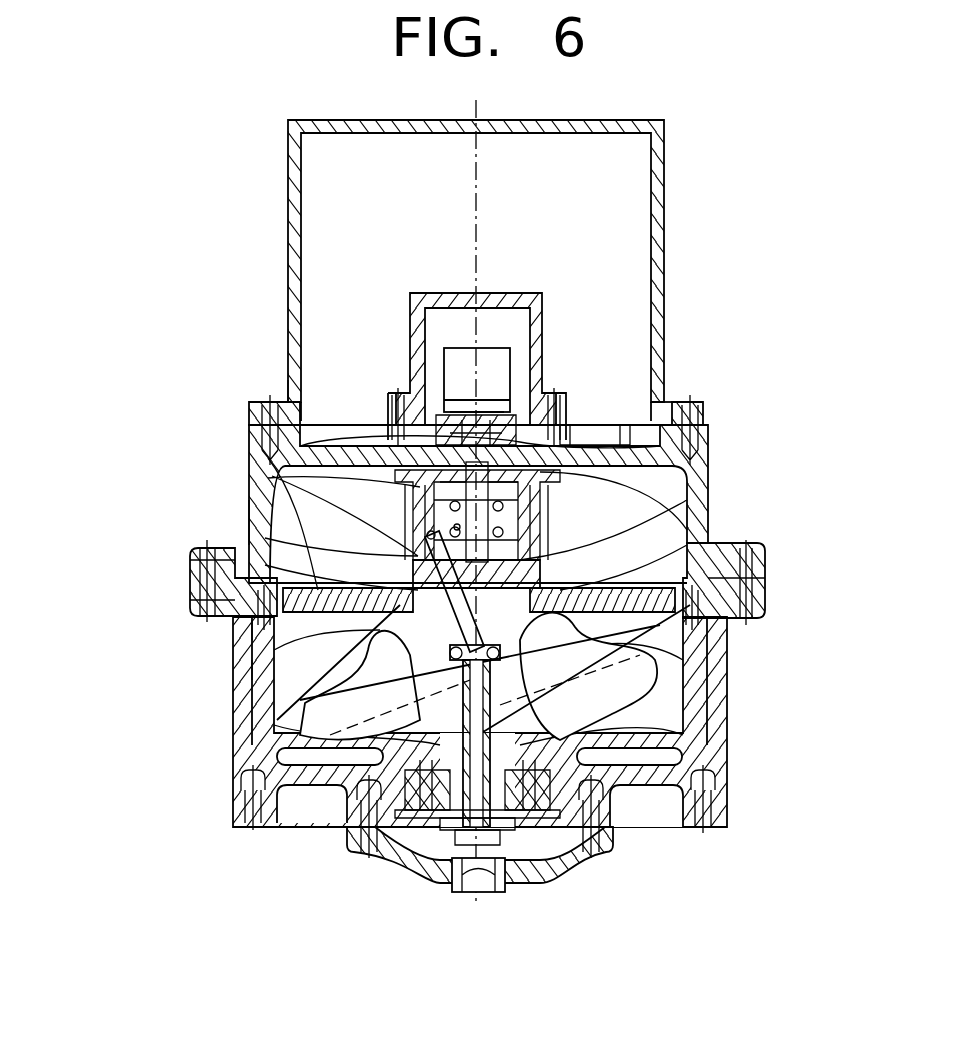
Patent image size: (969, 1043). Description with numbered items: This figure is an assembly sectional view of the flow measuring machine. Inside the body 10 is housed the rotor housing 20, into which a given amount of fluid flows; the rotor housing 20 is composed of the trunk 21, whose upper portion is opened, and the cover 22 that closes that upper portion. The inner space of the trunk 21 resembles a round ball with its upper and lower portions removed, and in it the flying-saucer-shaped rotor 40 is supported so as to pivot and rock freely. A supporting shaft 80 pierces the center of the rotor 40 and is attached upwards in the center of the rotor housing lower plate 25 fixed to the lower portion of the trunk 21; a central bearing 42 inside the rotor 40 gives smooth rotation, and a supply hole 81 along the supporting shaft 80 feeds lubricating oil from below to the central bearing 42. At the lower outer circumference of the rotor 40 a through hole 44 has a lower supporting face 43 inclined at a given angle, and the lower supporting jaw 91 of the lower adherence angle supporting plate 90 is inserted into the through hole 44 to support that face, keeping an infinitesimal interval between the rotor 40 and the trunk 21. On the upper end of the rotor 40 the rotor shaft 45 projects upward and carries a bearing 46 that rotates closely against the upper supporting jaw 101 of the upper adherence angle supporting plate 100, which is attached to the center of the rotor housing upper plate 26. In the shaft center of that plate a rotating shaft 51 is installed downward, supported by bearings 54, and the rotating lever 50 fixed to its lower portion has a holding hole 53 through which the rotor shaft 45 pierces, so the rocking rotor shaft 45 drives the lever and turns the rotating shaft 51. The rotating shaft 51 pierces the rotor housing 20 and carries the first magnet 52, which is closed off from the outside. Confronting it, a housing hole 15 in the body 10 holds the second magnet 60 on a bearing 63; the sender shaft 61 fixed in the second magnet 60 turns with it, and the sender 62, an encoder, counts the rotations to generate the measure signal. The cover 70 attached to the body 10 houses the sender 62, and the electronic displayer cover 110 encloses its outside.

The body 10 is at (173, 587).
The housing hole 15 is at (590, 440).
The rotor housing 20 is at (108, 657).
The trunk 21 is at (265, 667).
The cover 22 is at (250, 617).
The rotor housing lower plate 25 is at (478, 885).
The rotor housing upper plate 26 is at (288, 385).
The rotor 40 is at (700, 650).
The central bearing 42 is at (330, 785).
The lower supporting face 43 is at (683, 655).
The through hole 44 is at (600, 800).
The rotor shaft 45 is at (330, 715).
The bearing 46 is at (250, 533).
The rotating lever 50 is at (702, 612).
The rotating shaft 51 is at (590, 498).
The first magnet 52 is at (640, 445).
The holding hole 53 is at (205, 548).
The bearings 54 is at (700, 610).
The second magnet 60 is at (633, 440).
The sender shaft 61 is at (555, 435).
The sender 62 is at (542, 372).
The bearing 63 is at (692, 428).
The cover 70 is at (548, 322).
The supporting shaft 80 is at (660, 752).
The supply hole 81 is at (555, 815).
The lower adherence angle supporting plate 90 is at (442, 823).
The lower supporting jaw 91 is at (420, 805).
The upper adherence angle supporting plate 100 is at (440, 540).
The upper supporting jaw 101 is at (445, 525).
The electronic displayer cover 110 is at (657, 162).